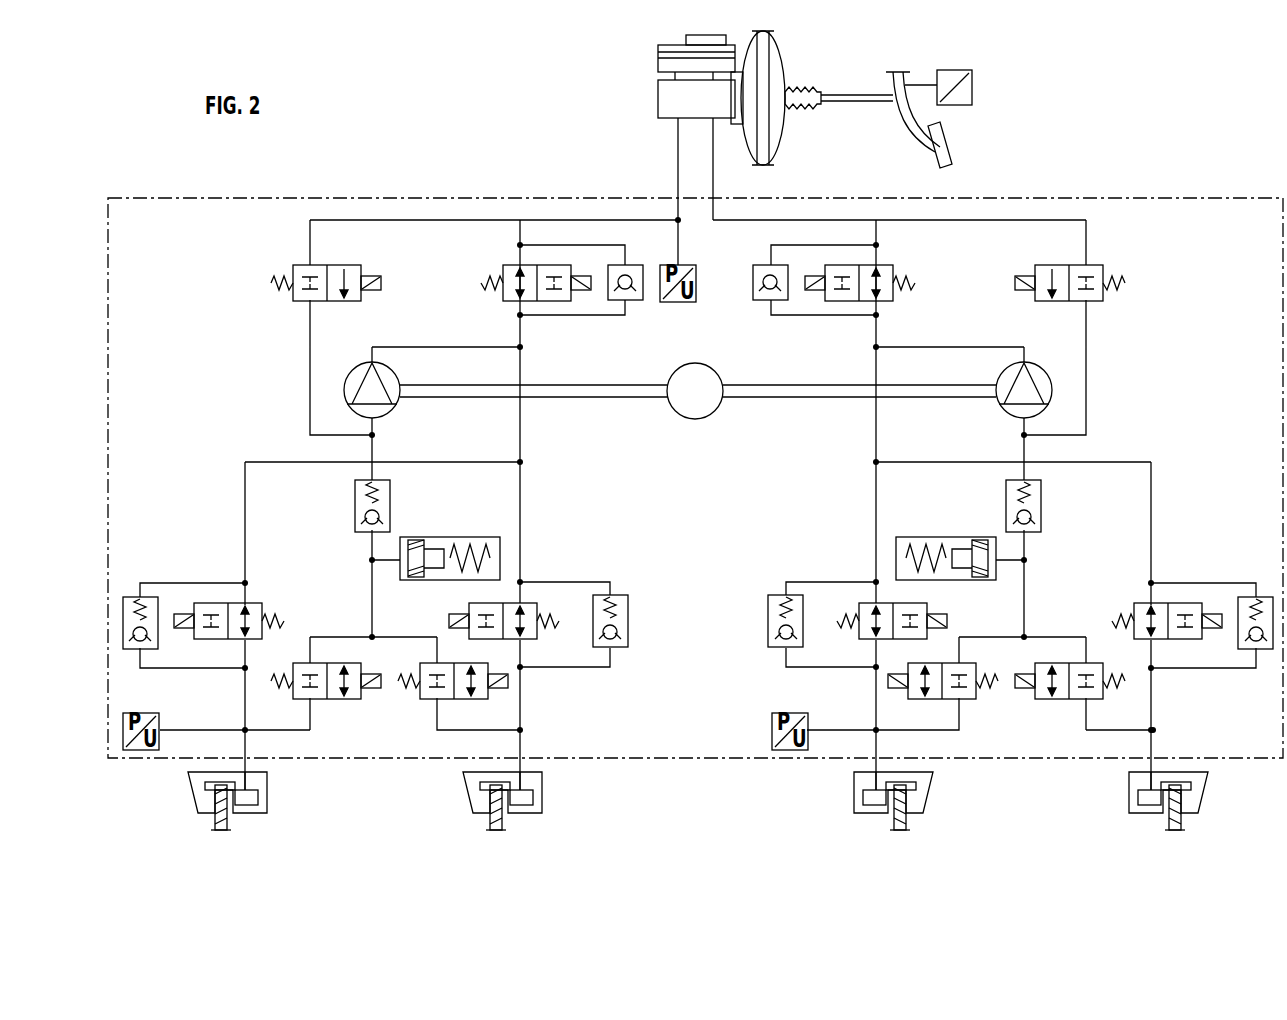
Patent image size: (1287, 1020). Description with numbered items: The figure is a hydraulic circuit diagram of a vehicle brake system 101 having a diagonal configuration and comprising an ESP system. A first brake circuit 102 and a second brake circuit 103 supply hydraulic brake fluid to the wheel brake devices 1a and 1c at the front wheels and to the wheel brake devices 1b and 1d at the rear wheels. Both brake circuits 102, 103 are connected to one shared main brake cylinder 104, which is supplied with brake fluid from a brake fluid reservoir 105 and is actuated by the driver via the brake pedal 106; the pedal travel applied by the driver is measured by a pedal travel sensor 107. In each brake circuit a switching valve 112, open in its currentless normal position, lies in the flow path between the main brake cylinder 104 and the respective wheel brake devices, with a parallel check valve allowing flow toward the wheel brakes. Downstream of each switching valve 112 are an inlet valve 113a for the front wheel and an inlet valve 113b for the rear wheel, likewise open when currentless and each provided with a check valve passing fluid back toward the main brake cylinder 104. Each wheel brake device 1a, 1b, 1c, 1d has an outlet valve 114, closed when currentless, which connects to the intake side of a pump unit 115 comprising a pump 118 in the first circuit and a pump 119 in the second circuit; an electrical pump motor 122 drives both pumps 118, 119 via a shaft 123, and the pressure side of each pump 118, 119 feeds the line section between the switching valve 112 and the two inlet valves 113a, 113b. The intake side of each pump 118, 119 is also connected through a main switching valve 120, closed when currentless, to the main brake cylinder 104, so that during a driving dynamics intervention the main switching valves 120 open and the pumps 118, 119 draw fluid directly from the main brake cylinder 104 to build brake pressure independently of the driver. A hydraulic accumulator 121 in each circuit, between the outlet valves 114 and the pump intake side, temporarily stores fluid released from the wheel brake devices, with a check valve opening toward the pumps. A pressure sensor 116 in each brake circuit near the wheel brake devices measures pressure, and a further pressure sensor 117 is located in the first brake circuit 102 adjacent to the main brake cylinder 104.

The brake system 101 is at (1118, 155).
The first brake circuit 102 is at (676, 165).
The second brake circuit 103 is at (716, 178).
The main brake cylinder 104 is at (658, 98).
The brake fluid reservoir 105 is at (658, 43).
The brake pedal 106 is at (950, 143).
The pedal travel sensor 107 is at (975, 86).
The switching valve 112 is at (510, 301).
The inlet valve of the front wheels 113a is at (254, 602).
The inlet valve of the rear wheels 113b is at (530, 602).
The outlet valve 114 is at (302, 660).
The pump unit 115 is at (735, 373).
The pressure sensor 116 is at (142, 752).
The further pressure sensor 117 is at (676, 303).
The pump 118 is at (388, 420).
The pump 119 is at (1008, 420).
The main switching valve 120 is at (302, 302).
The hydraulic accumulator 121 is at (442, 545).
The pump motor 122 is at (708, 420).
The shaft 123 is at (596, 400).
The wheel brake device 1a is at (280, 796).
The wheel brake device 1b is at (557, 796).
The wheel brake device 1c is at (840, 796).
The wheel brake device 1d is at (1118, 796).